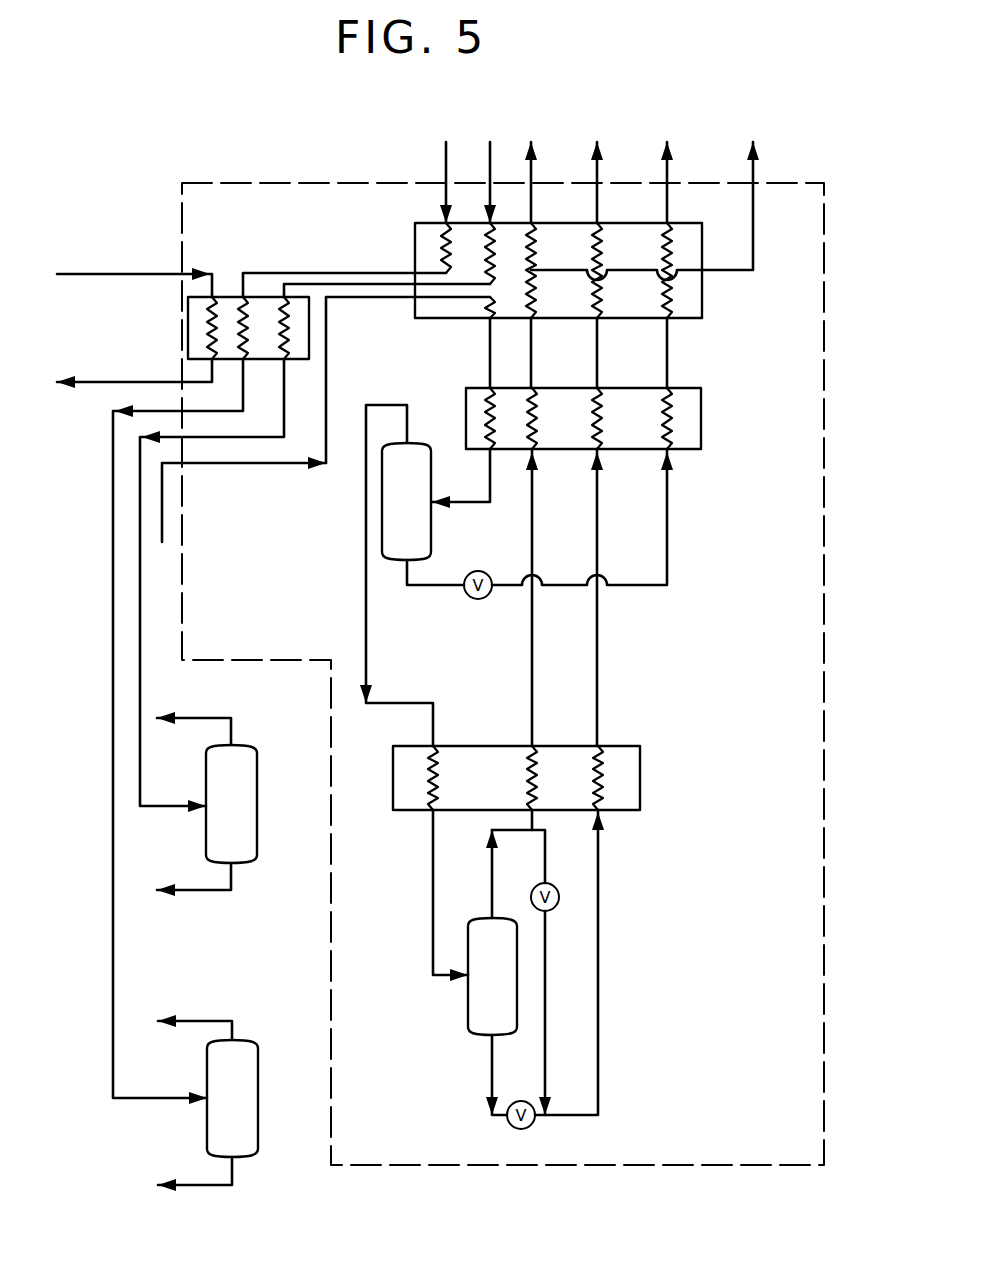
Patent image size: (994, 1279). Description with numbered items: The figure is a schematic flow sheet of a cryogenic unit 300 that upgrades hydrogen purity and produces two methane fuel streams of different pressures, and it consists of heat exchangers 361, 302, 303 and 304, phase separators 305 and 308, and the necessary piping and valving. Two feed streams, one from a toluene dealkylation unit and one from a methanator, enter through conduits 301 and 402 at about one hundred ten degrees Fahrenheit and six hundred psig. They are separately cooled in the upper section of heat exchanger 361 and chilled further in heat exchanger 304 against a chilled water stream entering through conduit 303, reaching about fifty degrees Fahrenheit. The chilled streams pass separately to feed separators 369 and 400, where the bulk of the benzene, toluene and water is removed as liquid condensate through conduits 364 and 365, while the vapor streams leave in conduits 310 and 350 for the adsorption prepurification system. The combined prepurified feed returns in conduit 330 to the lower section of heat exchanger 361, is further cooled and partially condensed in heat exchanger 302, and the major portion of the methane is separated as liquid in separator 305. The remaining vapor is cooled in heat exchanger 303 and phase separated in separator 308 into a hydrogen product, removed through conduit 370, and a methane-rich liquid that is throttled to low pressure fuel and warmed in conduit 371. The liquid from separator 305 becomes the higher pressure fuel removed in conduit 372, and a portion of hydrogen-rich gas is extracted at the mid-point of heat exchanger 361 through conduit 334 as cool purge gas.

The cryogenic unit 300 is at (830, 216).
The conduit 301 is at (446, 151).
The conduit 402 is at (490, 154).
The conduit 370 is at (533, 168).
The conduit 371 is at (600, 170).
The conduit 372 is at (670, 170).
The conduit 334 is at (755, 172).
The heat exchanger 361 is at (415, 238).
The heat exchanger / chilled water conduit 303 is at (123, 273).
The heat exchanger 304 is at (188, 348).
The conduit 330 is at (163, 497).
The heat exchanger 302 is at (703, 396).
The separator 305 is at (431, 531).
The separator 308 is at (468, 1002).
The feed separator 369 is at (257, 806).
The conduit 350 is at (209, 718).
The conduit 365 is at (200, 890).
The feed separator 400 is at (258, 1070).
The conduit 310 is at (200, 1021).
The conduit 364 is at (200, 1185).